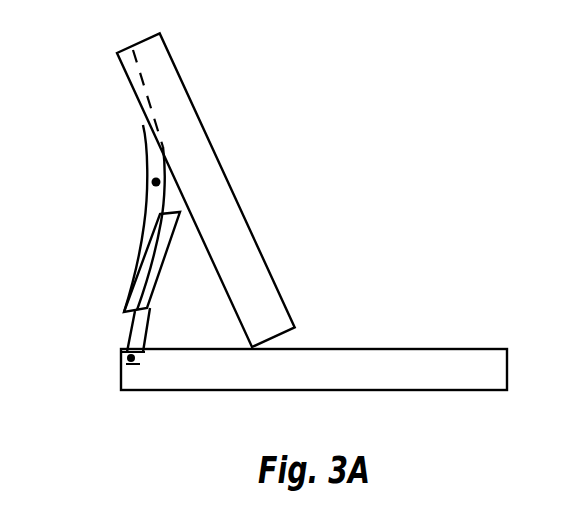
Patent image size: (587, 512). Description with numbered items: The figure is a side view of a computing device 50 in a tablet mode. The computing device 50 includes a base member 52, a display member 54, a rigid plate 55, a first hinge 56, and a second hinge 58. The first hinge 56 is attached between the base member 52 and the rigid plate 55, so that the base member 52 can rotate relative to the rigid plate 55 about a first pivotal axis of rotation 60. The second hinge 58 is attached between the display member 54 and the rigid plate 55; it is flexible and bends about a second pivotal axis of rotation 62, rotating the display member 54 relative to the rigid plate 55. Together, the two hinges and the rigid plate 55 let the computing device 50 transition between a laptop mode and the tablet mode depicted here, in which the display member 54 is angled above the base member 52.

The computing device 50 is at (392, 101).
The base member 52 is at (375, 349).
The display member 54 is at (241, 211).
The rigid plate 55 is at (154, 307).
The first hinge 56 is at (150, 333).
The second hinge 58 is at (140, 104).
The first pivotal axis of rotation 60 is at (127, 357).
The second pivotal axis of rotation 62 is at (151, 182).